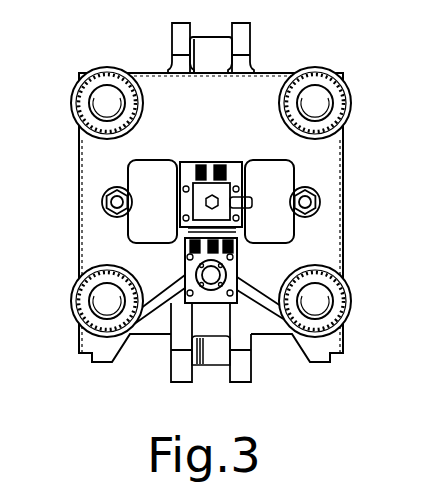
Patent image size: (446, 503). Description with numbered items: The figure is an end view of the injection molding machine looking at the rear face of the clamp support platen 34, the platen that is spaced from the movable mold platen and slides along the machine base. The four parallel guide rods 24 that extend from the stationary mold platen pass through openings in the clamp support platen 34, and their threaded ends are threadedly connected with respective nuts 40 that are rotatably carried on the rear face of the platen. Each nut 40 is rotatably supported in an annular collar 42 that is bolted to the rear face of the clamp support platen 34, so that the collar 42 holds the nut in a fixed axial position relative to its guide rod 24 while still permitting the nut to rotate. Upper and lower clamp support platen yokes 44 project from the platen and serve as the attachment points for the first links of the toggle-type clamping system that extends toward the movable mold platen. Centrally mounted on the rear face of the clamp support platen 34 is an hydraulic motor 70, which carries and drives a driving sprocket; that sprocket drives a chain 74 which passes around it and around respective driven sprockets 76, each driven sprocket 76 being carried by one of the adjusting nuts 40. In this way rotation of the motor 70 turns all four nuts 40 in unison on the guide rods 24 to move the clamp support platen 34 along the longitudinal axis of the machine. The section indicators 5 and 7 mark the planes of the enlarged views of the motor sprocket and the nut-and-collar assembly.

The guide rods 24 is at (100, 97).
The clamp support platen 34 is at (330, 153).
The nuts 40 is at (143, 92).
The annular collars 42 is at (107, 67).
The clamp support platen yokes 44 is at (240, 30).
The hydraulic motor 70 is at (188, 307).
The chain 74 is at (78, 210).
The driven sprockets 76 is at (142, 110).
The section line 5 is at (247, 221).
The section line 7 is at (136, 160).